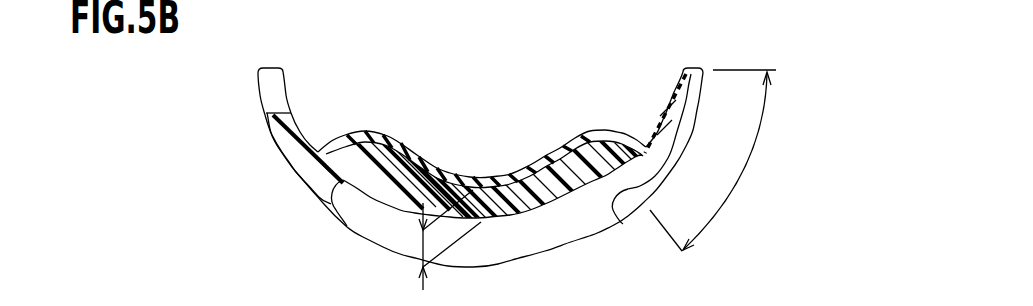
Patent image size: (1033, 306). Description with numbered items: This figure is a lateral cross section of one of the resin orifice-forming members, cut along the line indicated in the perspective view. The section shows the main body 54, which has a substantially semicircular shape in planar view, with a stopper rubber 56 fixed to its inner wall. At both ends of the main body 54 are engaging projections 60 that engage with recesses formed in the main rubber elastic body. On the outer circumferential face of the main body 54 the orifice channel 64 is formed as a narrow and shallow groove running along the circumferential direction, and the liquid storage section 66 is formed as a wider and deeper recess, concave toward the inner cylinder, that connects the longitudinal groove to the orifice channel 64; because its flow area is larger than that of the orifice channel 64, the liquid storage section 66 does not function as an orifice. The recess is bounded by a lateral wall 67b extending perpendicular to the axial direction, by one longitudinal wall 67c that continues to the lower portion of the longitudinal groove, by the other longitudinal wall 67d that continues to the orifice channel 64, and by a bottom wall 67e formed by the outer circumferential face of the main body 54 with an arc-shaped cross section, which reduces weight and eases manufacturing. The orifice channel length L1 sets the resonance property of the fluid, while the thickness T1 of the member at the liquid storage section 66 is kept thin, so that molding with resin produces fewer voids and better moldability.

The engaging projection 60 is at (269, 67).
The stopper rubber 56 is at (482, 178).
The orifice channel 64 is at (674, 143).
The main body 54 is at (557, 199).
The liquid storage section 66 is at (458, 230).
The lateral wall 67b is at (390, 229).
The longitudinal wall 67c is at (340, 214).
The longitudinal wall 67d is at (612, 198).
The bottom wall 67e is at (493, 218).
The thickness T1 is at (422, 247).
The orifice channel length L1 is at (713, 160).